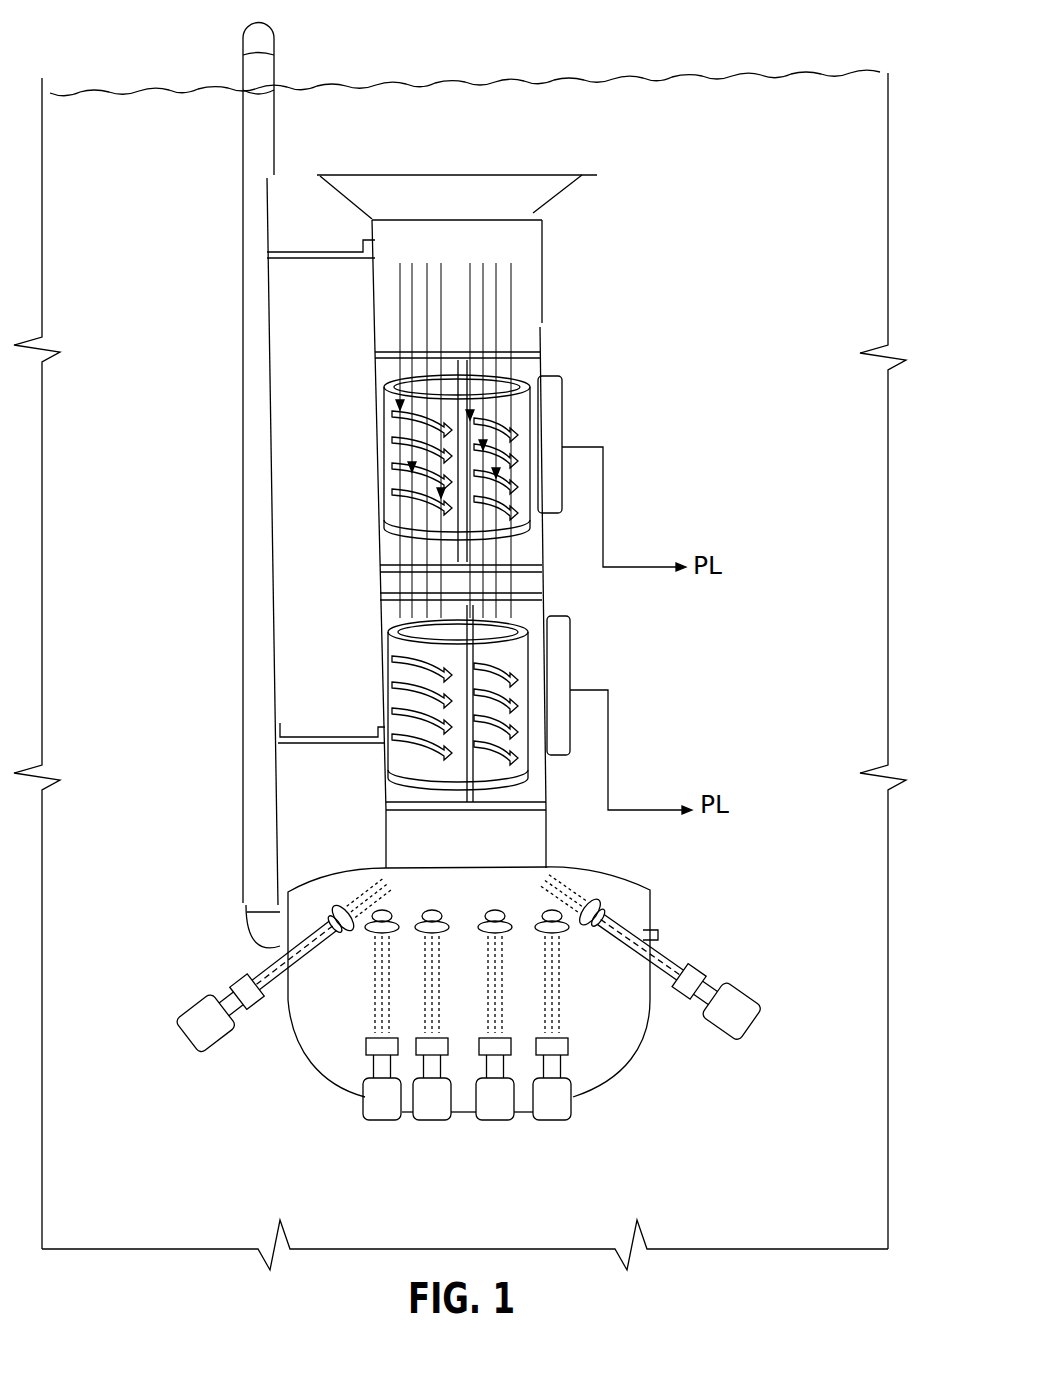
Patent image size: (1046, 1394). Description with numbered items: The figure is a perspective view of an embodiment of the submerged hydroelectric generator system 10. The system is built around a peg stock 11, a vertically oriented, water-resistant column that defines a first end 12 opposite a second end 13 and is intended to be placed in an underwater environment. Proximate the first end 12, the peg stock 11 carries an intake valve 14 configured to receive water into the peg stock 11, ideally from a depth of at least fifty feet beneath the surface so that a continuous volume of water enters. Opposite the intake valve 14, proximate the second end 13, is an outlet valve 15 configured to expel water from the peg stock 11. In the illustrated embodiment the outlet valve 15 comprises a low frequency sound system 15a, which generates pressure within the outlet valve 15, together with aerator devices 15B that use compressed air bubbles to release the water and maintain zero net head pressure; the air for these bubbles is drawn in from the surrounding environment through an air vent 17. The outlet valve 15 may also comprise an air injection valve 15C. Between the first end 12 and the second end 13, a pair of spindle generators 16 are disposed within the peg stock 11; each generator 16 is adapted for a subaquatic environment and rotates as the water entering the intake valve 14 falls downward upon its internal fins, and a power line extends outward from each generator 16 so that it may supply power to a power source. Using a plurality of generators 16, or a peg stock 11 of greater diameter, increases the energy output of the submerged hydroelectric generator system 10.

The submerged hydroelectric generator system 10 is at (208, 114).
The peg stock 11 is at (540, 333).
The first end 12 is at (541, 262).
The second end 13 is at (546, 840).
The intake valve 14 is at (552, 168).
The outlet valve 15 is at (648, 886).
The low frequency sound system 15a is at (478, 924).
The aerator device 15B is at (703, 966).
The air injection valve 15C is at (278, 922).
The generator 16 is at (565, 415).
The air vent 17 is at (243, 492).